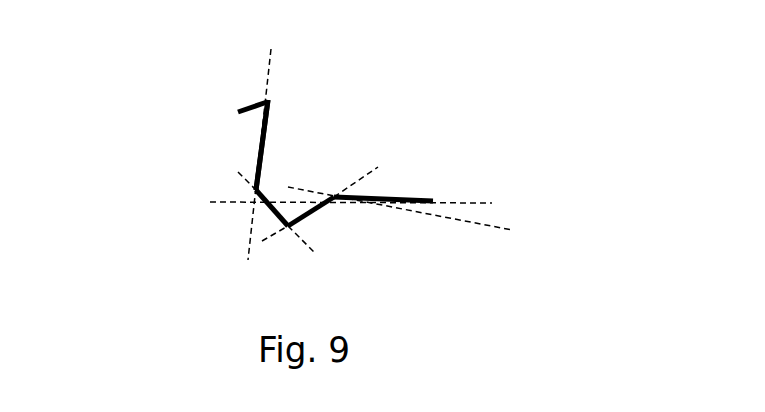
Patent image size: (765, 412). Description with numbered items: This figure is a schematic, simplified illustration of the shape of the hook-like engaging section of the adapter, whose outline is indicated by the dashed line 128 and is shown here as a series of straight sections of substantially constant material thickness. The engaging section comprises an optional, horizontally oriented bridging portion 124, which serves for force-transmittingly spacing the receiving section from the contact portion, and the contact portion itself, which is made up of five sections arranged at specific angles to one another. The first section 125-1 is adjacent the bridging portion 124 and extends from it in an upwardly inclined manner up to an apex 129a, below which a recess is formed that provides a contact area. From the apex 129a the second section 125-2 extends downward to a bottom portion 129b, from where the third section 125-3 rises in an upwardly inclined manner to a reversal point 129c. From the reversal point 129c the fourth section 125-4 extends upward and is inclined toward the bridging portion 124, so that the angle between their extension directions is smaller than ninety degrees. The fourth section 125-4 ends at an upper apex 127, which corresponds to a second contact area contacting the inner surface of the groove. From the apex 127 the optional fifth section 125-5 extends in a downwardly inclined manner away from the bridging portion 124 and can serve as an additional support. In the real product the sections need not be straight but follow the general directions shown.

The bridging portion 124 is at (398, 200).
The first section 125-1 is at (356, 203).
The second section 125-2 is at (302, 214).
The third section 125-3 is at (278, 218).
The fourth section 125-4 is at (267, 139).
The fifth section 125-5 is at (247, 110).
The apex 127 is at (271, 98).
The dashed line 128 is at (250, 157).
The apex 129a is at (333, 192).
The bottom portion 129b is at (288, 230).
The reversal point 129c is at (251, 191).